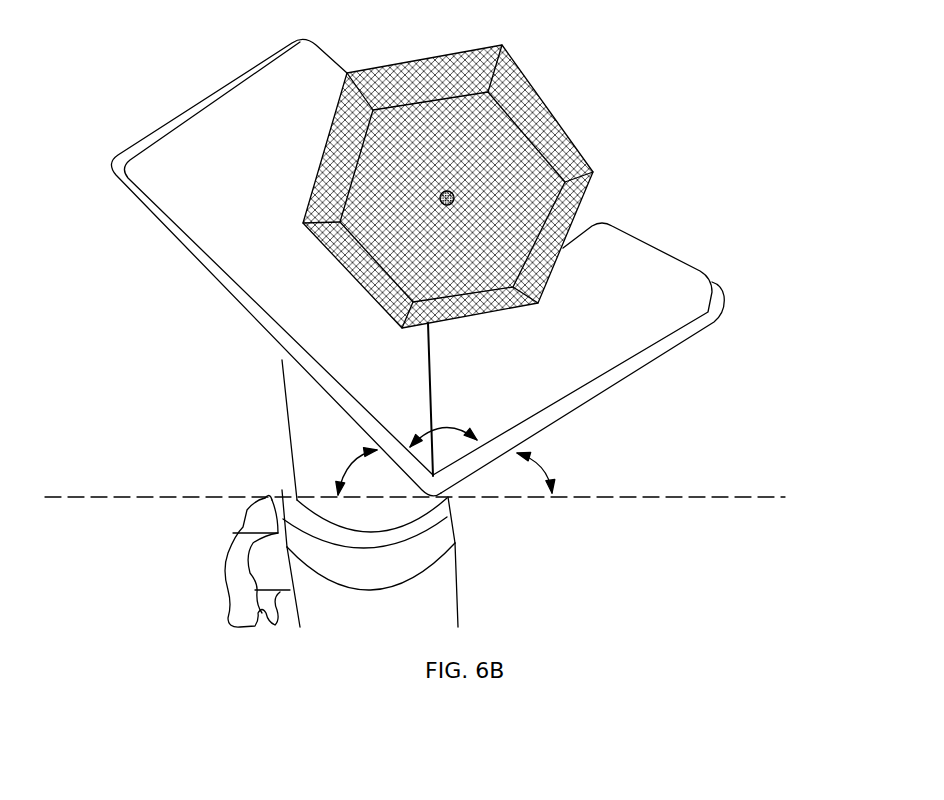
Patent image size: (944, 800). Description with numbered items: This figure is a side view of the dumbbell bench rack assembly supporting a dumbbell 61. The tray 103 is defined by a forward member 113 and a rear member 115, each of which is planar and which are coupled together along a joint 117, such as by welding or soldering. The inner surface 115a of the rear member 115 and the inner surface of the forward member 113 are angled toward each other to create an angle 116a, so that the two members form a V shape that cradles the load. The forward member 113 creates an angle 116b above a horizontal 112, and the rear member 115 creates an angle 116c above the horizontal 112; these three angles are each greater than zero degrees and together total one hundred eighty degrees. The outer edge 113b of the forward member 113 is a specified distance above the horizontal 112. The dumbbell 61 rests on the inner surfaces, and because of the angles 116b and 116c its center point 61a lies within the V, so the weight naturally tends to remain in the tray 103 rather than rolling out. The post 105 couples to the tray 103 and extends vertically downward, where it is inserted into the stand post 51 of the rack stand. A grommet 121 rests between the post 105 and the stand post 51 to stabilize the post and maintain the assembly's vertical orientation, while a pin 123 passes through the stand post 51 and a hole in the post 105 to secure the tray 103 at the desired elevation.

The tray 103 is at (200, 70).
The dumbbell 61 is at (520, 70).
The center point 61a is at (457, 187).
The rear member 115 is at (197, 280).
The inner surface 115a is at (264, 178).
The forward member 113 is at (617, 388).
The outer edge 113b is at (700, 270).
The joint 117 is at (428, 377).
The post 105 is at (282, 380).
The angle 116a is at (443, 428).
The angle 116b is at (543, 476).
The angle 116c is at (347, 467).
The horizontal 112 is at (180, 497).
The grommet 121 is at (393, 557).
The stand post 51 is at (458, 612).
The pin 123 is at (233, 533).